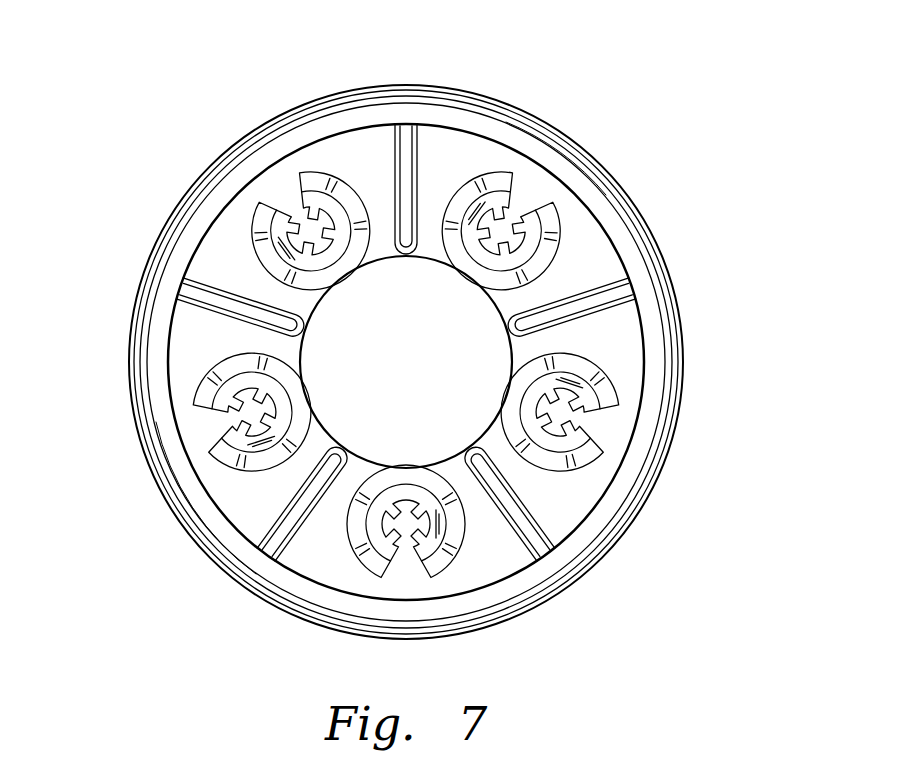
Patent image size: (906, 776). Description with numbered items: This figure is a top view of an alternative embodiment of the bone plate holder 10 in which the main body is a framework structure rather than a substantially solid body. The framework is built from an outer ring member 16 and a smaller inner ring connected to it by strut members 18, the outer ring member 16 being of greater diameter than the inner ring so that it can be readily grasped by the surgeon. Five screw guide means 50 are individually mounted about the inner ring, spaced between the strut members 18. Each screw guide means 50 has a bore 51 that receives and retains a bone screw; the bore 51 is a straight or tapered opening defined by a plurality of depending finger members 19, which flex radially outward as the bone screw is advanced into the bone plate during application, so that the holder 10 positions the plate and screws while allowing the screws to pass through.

The bone plate holder 10 is at (658, 167).
The outer ring member 16 is at (658, 357).
The strut members 18 is at (522, 518).
The depending finger members 19 is at (330, 320).
The screw guide means 50 is at (452, 165).
The bore 51 is at (503, 226).